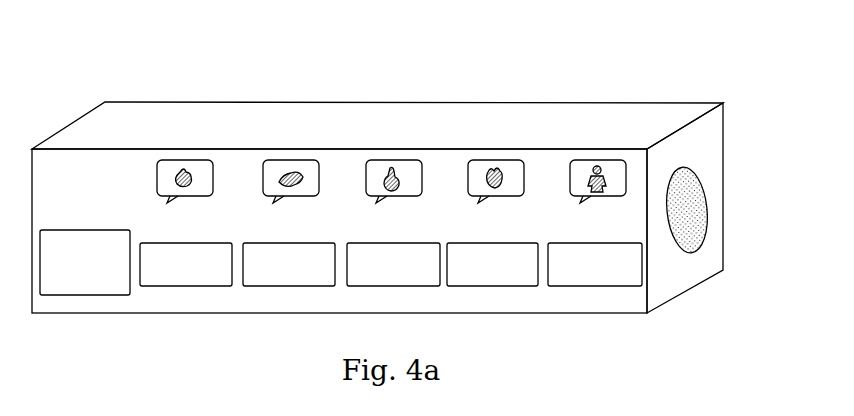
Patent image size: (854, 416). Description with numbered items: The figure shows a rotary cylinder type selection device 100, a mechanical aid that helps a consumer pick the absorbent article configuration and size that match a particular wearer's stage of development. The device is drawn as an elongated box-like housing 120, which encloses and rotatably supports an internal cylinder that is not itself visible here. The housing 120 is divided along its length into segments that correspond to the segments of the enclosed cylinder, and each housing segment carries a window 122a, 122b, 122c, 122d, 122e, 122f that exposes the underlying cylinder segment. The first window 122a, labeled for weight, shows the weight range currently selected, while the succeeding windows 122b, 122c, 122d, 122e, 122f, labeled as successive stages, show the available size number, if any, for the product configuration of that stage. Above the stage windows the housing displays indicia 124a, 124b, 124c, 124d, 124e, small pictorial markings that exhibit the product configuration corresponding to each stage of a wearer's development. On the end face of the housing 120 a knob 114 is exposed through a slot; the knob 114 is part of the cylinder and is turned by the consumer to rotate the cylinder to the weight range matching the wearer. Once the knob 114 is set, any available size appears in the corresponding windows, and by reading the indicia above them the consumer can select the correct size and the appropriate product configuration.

The rotary cylinder type selection device 100 is at (408, 190).
The housing 120 is at (716, 134).
The knob 114 is at (707, 209).
The window 122a is at (83, 295).
The window 122b is at (185, 286).
The window 122c is at (290, 286).
The window 122d is at (390, 286).
The window 122e is at (492, 286).
The window 122f is at (593, 286).
The indicia 124a is at (186, 160).
The indicia 124b is at (290, 160).
The indicia 124c is at (390, 160).
The indicia 124d is at (496, 160).
The indicia 124e is at (600, 160).